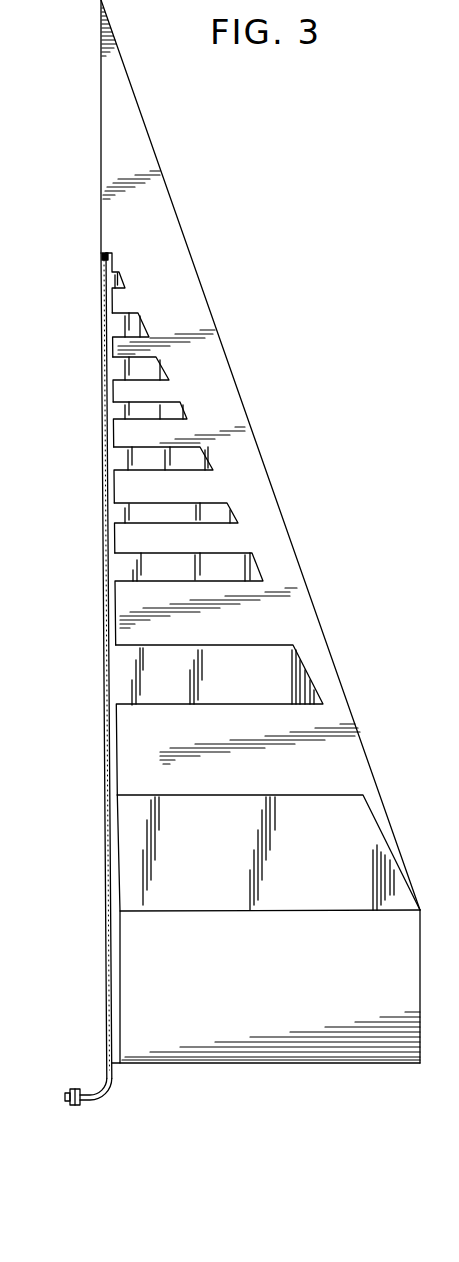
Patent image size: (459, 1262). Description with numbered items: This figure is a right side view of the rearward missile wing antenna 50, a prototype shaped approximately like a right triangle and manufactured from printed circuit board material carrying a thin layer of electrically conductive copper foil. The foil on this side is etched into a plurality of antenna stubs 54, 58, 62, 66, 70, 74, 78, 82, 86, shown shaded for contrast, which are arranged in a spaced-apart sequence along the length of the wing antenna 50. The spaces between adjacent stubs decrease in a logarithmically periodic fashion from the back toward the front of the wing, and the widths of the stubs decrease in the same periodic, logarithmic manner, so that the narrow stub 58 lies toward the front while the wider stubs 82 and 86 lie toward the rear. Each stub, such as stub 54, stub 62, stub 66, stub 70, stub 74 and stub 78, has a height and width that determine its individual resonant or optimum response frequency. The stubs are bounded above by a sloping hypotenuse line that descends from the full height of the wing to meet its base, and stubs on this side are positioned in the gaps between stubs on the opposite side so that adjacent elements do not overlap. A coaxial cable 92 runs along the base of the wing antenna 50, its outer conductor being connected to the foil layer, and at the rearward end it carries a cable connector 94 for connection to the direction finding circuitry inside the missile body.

The wing antenna 50 is at (268, 476).
The antenna stub 54 is at (113, 284).
The antenna stub 58 is at (120, 329).
The antenna stub 62 is at (127, 369).
The antenna stub 66 is at (137, 413).
The antenna stub 70 is at (135, 463).
The antenna stub 74 is at (129, 515).
The antenna stub 78 is at (135, 567).
The antenna stub 82 is at (135, 672).
The antenna stub 86 is at (143, 855).
The coaxial cable 92 is at (107, 1028).
The cable connector 94 is at (75, 1107).